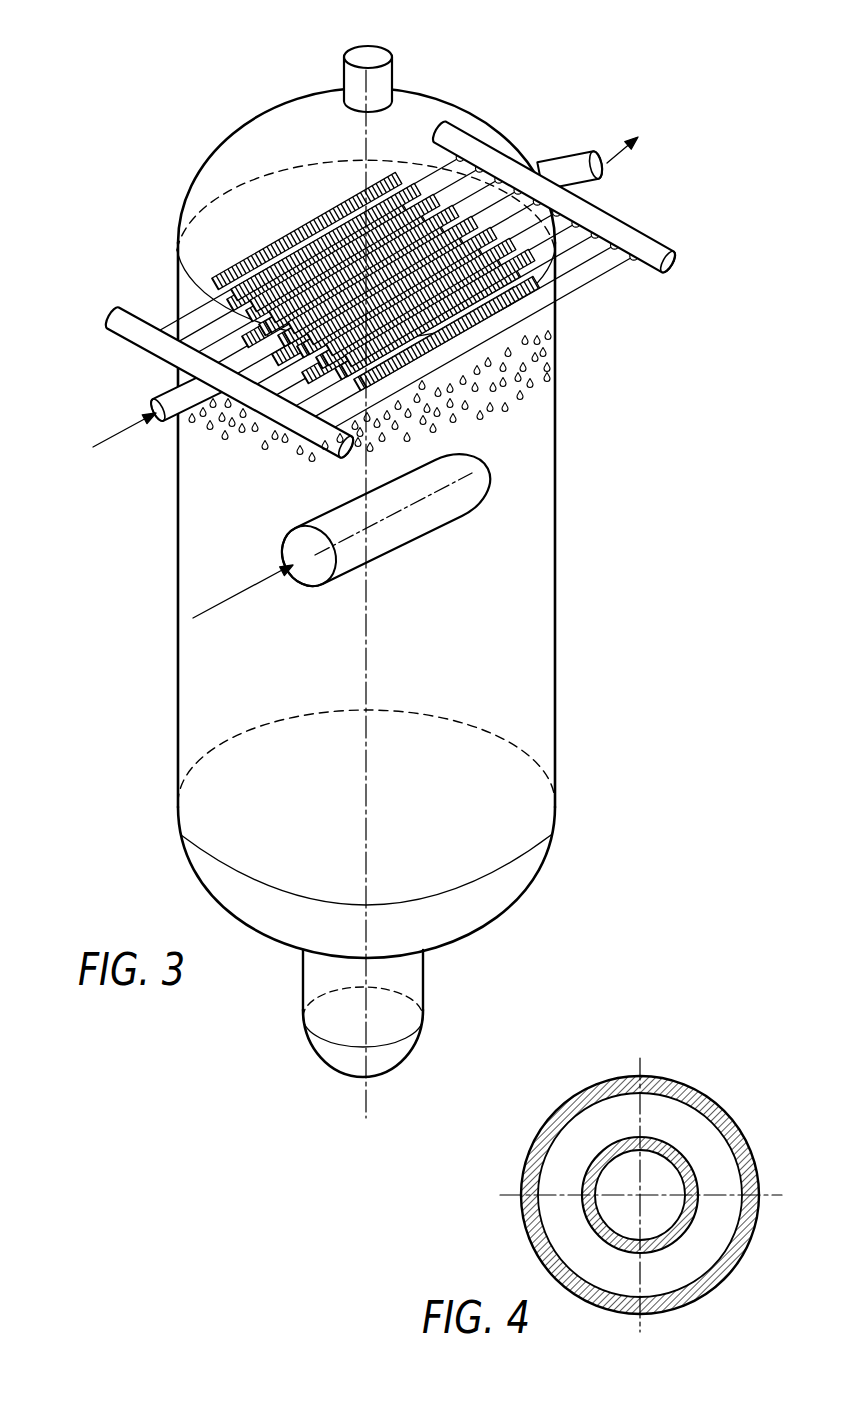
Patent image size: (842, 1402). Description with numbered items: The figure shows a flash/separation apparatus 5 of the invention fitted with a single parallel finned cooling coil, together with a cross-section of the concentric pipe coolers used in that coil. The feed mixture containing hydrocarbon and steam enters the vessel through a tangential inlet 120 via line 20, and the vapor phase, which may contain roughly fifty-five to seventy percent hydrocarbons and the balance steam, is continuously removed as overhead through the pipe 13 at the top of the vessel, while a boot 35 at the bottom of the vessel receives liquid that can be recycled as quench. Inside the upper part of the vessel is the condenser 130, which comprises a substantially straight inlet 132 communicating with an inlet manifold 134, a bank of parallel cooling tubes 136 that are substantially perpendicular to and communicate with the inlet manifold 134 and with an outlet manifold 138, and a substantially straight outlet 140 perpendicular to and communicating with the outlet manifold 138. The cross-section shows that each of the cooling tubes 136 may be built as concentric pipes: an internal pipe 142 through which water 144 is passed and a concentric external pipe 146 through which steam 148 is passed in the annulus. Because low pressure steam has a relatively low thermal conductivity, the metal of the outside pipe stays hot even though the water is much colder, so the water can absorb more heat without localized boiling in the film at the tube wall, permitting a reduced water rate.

In FIG. 3, the flash/separation apparatus 5 is at (384, 582).
In FIG. 3, the overhead pipe 13 is at (396, 78).
In FIG. 3, the feed line 20 is at (263, 580).
In FIG. 3, the boot 35 is at (427, 984).
In FIG. 3, the tangential inlet 120 is at (416, 541).
In FIG. 3, the condenser 130 is at (379, 274).
In FIG. 3, the inlet 132 is at (163, 391).
In FIG. 3, the inlet manifold 134 is at (107, 320).
In FIG. 3, the cooling tubes 136 is at (597, 286).
In FIG. 4, the cooling tubes 136 is at (626, 1172).
In FIG. 3, the outlet manifold 138 is at (645, 229).
In FIG. 3, the outlet 140 is at (578, 155).
In FIG. 4, the internal pipe 142 is at (672, 1148).
In FIG. 4, the water 144 is at (657, 1214).
In FIG. 4, the external pipe 146 is at (553, 1273).
In FIG. 4, the steam 148 is at (563, 1227).